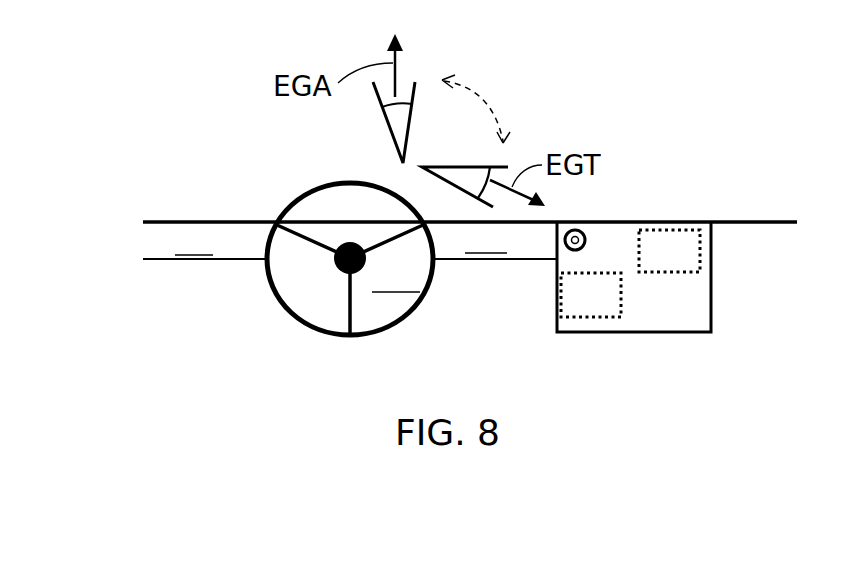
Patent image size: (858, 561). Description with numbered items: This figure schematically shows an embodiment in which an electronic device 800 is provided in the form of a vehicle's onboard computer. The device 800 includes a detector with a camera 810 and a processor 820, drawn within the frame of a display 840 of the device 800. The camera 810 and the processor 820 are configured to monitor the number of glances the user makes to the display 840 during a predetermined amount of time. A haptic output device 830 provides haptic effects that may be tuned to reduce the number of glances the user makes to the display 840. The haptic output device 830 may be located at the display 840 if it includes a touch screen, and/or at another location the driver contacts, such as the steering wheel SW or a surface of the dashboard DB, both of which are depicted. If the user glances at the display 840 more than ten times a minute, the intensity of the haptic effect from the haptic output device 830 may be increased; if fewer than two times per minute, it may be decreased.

The electronic device 800 is at (711, 126).
The camera 810 is at (579, 228).
The processor 820 is at (692, 262).
The haptic output device 830 is at (613, 307).
The display 840 is at (711, 285).